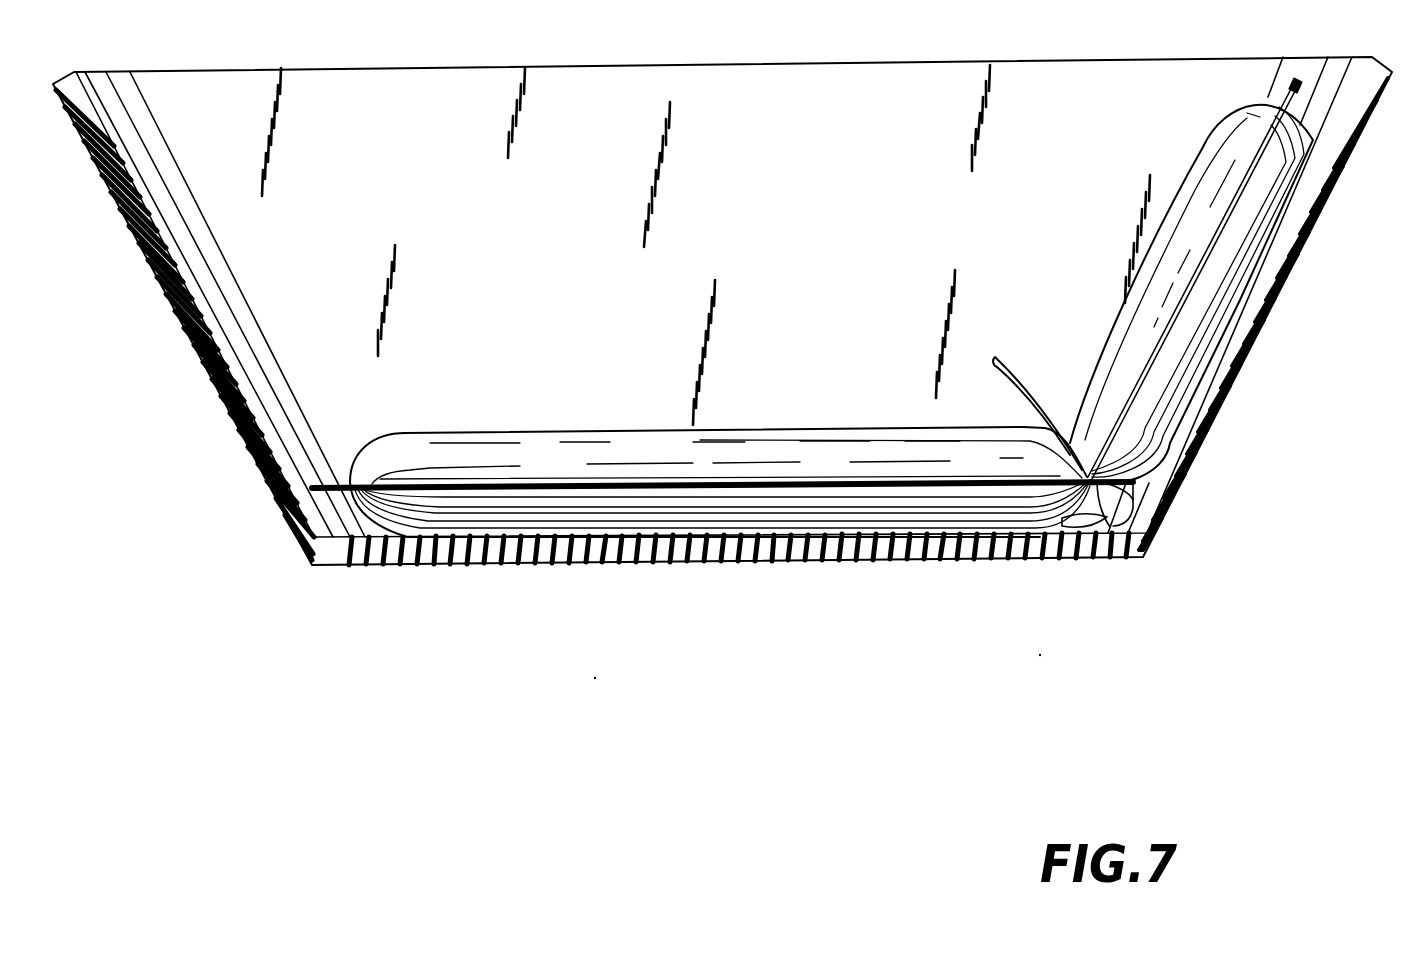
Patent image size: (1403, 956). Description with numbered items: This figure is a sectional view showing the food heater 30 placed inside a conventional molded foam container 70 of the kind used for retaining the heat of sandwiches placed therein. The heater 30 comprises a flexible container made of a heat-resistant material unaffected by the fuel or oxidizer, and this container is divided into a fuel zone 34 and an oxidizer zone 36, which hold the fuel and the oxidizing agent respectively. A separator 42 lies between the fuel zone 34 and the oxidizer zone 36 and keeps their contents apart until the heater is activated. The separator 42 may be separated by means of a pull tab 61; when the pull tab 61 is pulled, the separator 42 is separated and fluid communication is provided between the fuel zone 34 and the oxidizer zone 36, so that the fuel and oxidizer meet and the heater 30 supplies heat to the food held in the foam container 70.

The food heater 30 is at (788, 280).
The fuel zone 34 is at (1183, 223).
The oxidizer zone 36 is at (440, 452).
The separator 42 is at (1105, 485).
The pull tab 61 is at (1026, 387).
The molded foam container 70 is at (450, 568).